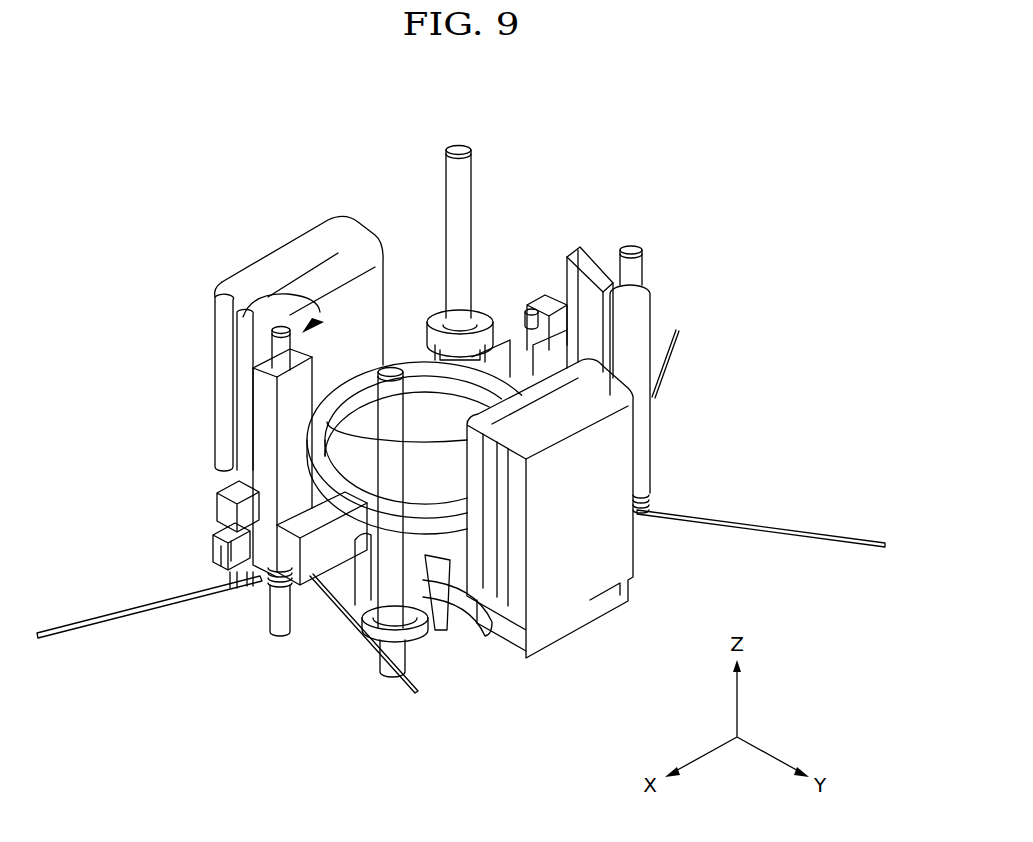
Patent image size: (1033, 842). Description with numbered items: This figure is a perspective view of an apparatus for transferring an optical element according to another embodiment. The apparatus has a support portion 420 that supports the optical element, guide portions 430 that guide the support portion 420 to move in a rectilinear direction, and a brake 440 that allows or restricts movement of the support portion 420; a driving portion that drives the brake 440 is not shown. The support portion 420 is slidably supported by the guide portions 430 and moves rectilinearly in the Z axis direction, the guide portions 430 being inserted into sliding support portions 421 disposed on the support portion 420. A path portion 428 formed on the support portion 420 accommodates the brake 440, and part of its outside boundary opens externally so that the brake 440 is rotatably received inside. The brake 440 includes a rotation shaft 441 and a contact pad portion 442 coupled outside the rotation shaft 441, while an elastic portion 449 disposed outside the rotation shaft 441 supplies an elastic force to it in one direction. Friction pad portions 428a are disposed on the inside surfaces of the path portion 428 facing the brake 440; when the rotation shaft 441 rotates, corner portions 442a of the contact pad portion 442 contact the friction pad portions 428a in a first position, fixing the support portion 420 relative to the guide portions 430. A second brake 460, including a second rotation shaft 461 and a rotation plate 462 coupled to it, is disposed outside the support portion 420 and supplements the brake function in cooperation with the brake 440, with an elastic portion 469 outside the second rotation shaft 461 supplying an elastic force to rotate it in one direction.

The support portion 420 is at (406, 342).
The sliding support portions 421 is at (484, 315).
The path portion 428 is at (230, 525).
The friction pad portions 428a is at (240, 512).
The guide portions 430 is at (468, 177).
The brake 440 is at (232, 461).
The rotation shaft 441 is at (280, 628).
The contact pad portion 442 is at (232, 434).
The corner portions 442a is at (336, 350).
The elastic portion 449 is at (107, 615).
The second brake 460 is at (649, 328).
The second rotation shaft 461 is at (637, 265).
The rotation plate 462 is at (587, 258).
The elastic portion 469 is at (648, 497).